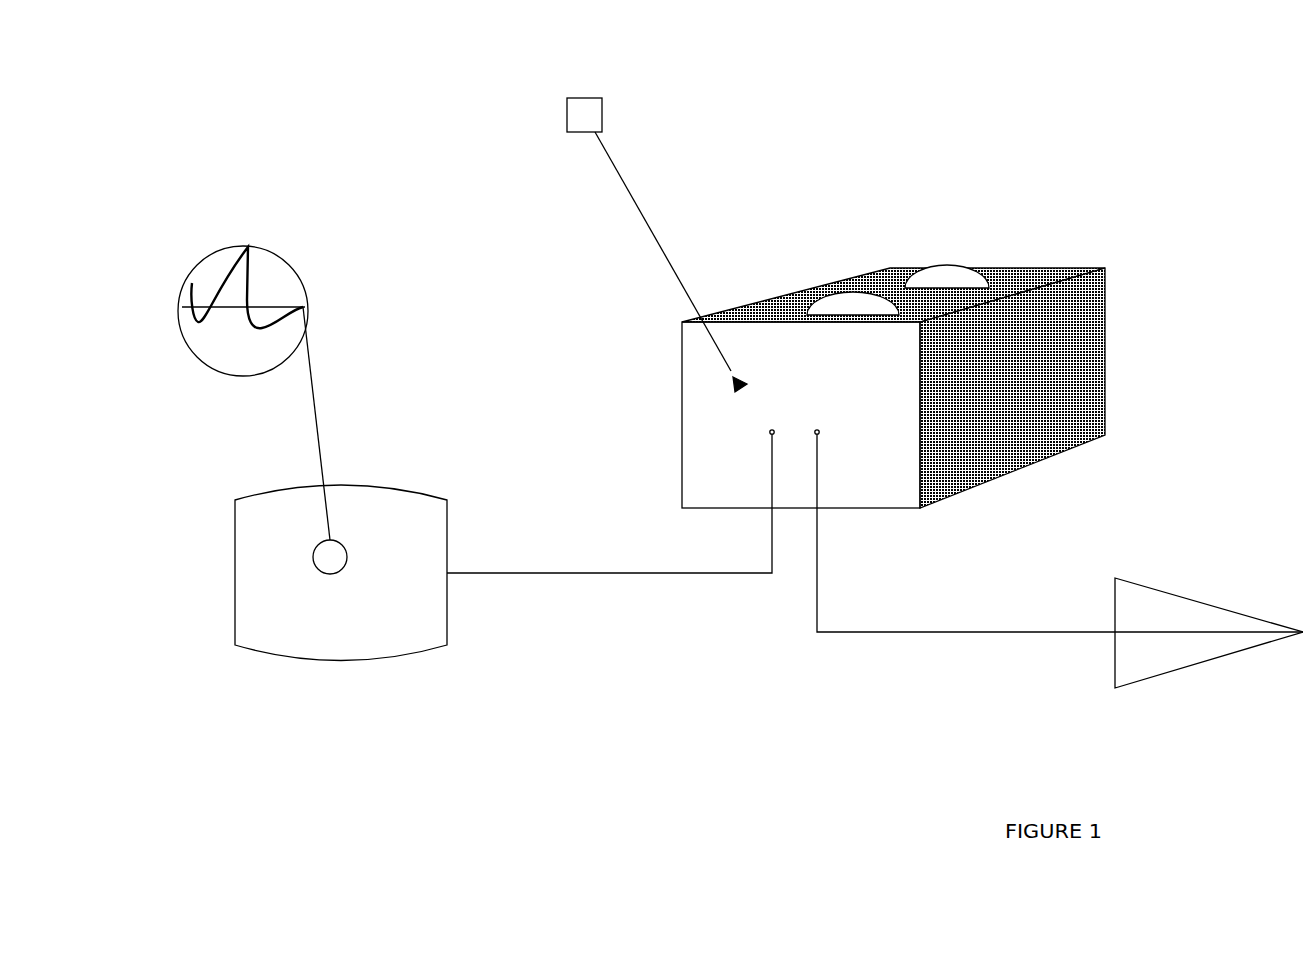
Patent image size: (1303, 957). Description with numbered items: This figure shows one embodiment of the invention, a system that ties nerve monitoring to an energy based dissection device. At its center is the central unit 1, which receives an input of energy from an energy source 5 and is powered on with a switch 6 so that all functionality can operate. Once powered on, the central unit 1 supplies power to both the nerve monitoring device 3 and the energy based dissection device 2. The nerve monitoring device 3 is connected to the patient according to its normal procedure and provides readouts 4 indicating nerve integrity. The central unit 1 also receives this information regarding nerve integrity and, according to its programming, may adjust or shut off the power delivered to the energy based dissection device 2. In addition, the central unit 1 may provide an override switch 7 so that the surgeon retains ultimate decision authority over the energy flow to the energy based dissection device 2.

The central unit 1 is at (1012, 377).
The energy based dissection device 2 is at (1175, 613).
The nerve monitoring device 3 is at (367, 487).
The readouts 4 is at (248, 247).
The energy source 5 is at (582, 113).
The switch 6 is at (945, 278).
The override switch 7 is at (853, 300).